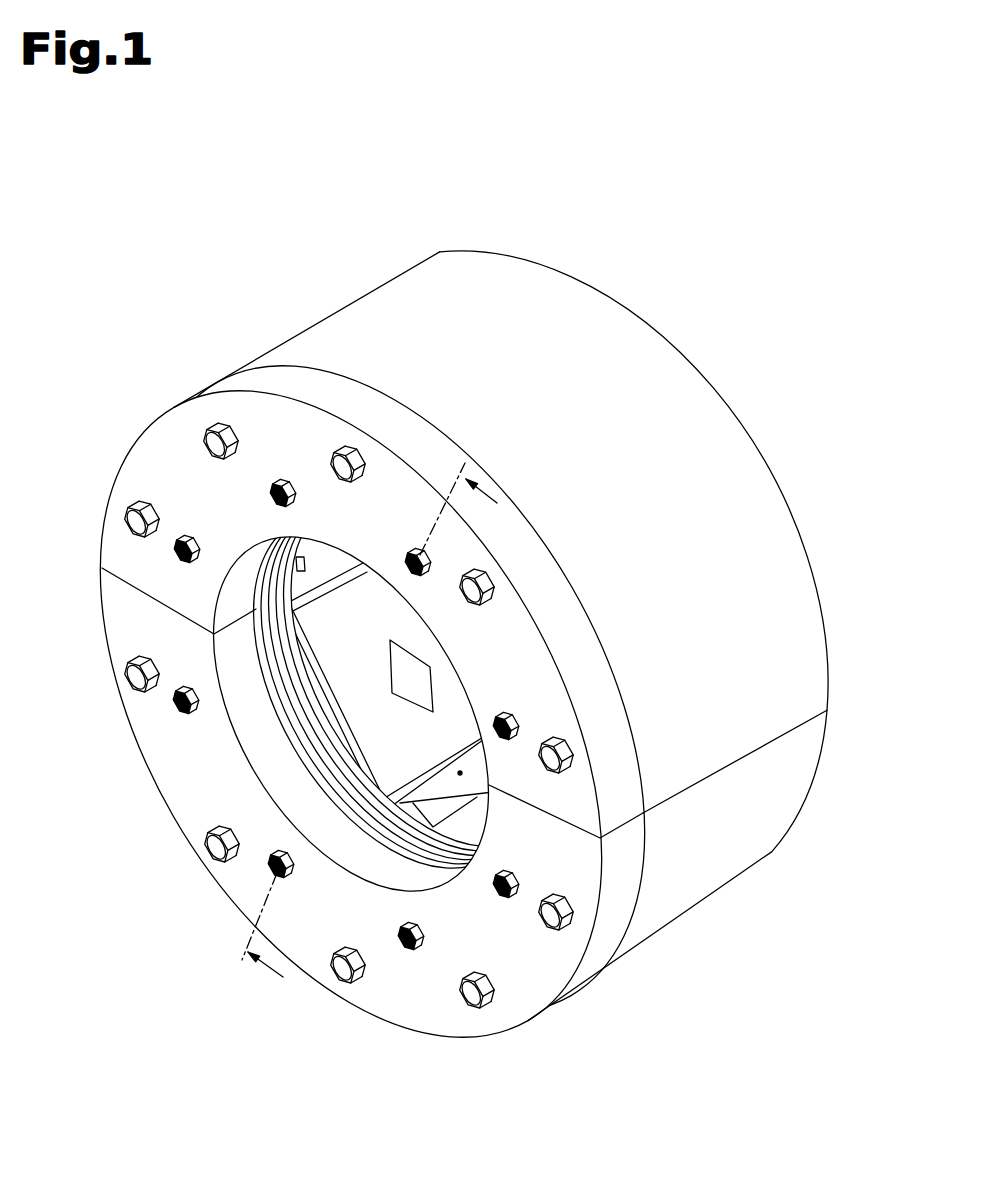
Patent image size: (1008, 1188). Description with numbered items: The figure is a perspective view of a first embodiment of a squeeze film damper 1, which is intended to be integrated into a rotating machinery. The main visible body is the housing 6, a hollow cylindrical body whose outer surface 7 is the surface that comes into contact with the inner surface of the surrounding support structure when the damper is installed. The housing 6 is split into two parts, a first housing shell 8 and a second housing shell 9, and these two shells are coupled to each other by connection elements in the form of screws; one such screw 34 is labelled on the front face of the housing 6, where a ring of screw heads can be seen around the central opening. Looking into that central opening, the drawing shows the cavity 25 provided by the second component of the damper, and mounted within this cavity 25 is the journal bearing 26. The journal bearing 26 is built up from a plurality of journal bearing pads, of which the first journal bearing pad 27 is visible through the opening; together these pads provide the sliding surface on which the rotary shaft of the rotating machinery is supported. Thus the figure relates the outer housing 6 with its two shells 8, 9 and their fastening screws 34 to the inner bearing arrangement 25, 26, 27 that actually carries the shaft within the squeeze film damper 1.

The squeeze film damper 1 is at (452, 644).
The housing 6 is at (452, 687).
The outer surface 7 is at (668, 470).
The first housing shell 8 is at (790, 685).
The second housing shell 9 is at (790, 777).
The cavity 25 is at (313, 768).
The journal bearing 26 is at (290, 537).
The first journal bearing pad 27 is at (377, 742).
The screw 34 is at (212, 428).